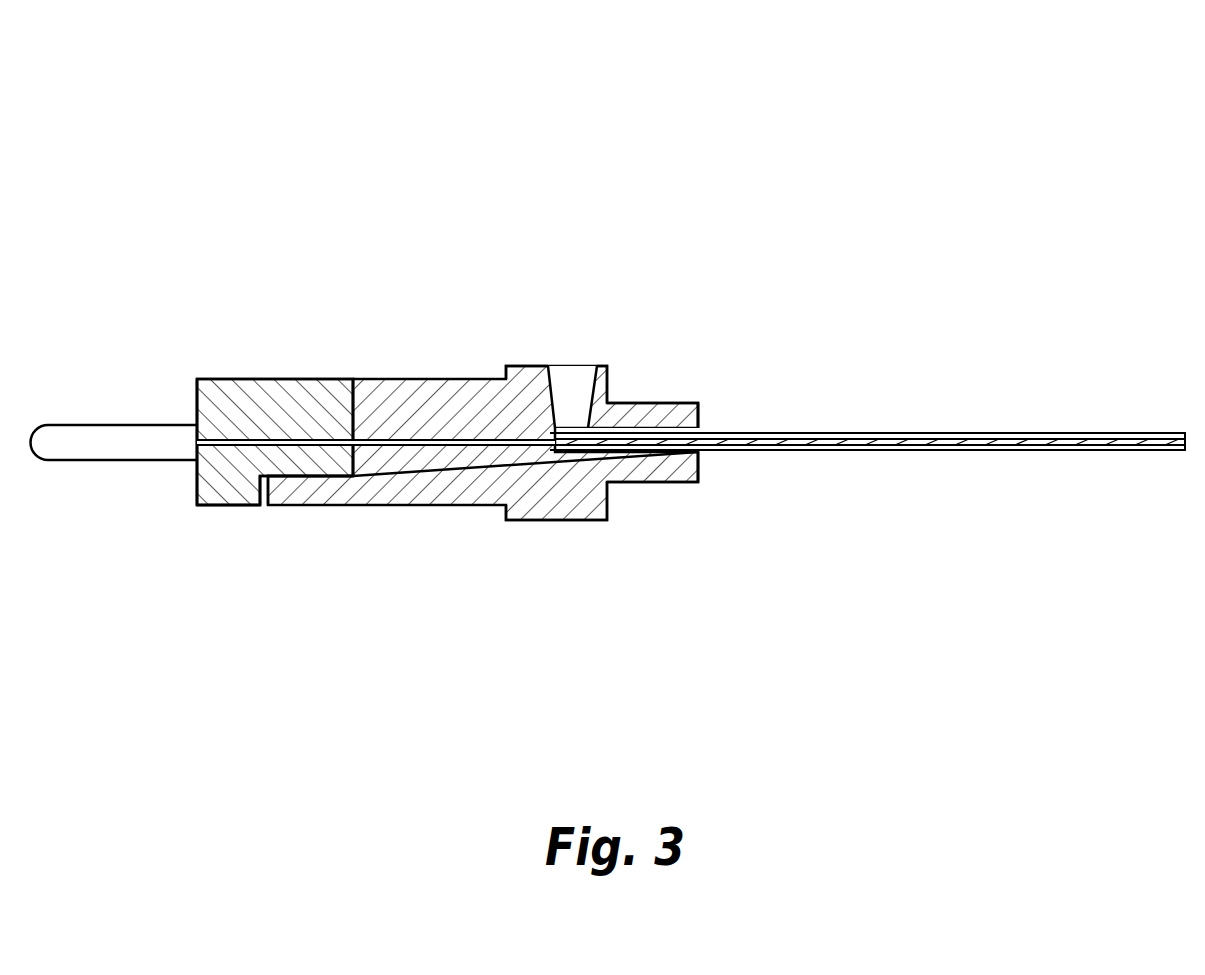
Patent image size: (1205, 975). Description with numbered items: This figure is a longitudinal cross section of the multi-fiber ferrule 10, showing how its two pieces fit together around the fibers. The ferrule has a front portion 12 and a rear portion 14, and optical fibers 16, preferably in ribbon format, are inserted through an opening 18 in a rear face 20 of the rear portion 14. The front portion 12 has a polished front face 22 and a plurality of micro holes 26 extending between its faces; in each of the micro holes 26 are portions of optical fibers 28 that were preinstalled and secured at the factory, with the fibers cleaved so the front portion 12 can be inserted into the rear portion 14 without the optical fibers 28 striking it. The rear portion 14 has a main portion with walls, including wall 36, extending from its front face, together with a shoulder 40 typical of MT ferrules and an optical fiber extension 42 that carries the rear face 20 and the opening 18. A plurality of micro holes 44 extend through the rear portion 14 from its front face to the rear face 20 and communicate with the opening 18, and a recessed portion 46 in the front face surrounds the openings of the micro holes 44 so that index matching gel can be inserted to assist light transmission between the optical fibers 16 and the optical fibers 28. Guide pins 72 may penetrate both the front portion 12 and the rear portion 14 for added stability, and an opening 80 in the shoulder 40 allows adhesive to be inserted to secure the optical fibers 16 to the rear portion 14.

The multi-fiber ferrule 10 is at (684, 188).
The front portion 12 is at (248, 380).
The rear portion 14 is at (447, 380).
The optical fibers 16 is at (1026, 433).
The opening 18 is at (678, 483).
The rear face 20 is at (699, 418).
The front face 22 is at (195, 406).
The micro holes 26 is at (203, 447).
The optical fibers 28 is at (318, 440).
The wall 36 is at (310, 506).
The shoulder 40 is at (565, 520).
The optical fiber extension 42 is at (653, 405).
The micro holes 44 is at (427, 447).
The recessed portion 46 is at (353, 380).
The guide pins 72 is at (78, 461).
The opening 80 is at (575, 375).